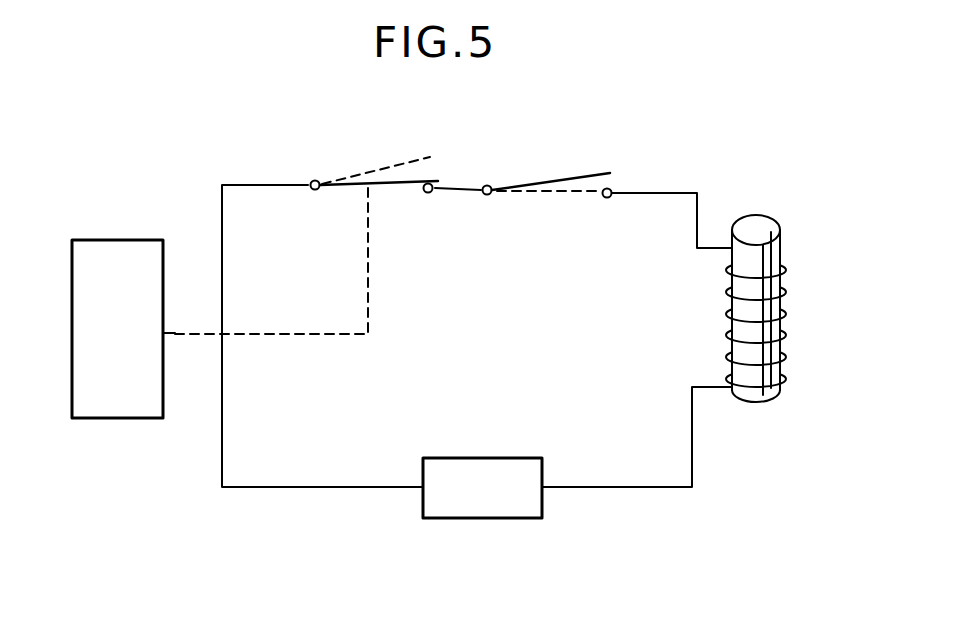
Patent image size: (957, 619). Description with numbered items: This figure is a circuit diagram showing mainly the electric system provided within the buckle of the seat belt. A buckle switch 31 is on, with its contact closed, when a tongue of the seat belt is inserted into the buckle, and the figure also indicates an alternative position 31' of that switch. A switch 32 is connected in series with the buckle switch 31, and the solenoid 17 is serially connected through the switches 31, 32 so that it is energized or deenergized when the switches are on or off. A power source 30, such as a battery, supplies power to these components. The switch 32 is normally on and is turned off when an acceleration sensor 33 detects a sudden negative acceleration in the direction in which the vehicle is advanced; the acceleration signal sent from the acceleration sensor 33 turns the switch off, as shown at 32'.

The solenoid 17 is at (755, 402).
The power source 30 is at (505, 518).
The buckle switch 31 is at (557, 164).
The second switch closed position 31' is at (562, 244).
The switch 32 is at (417, 162).
The switch off position 32' is at (353, 143).
The acceleration sensor 33 is at (123, 418).